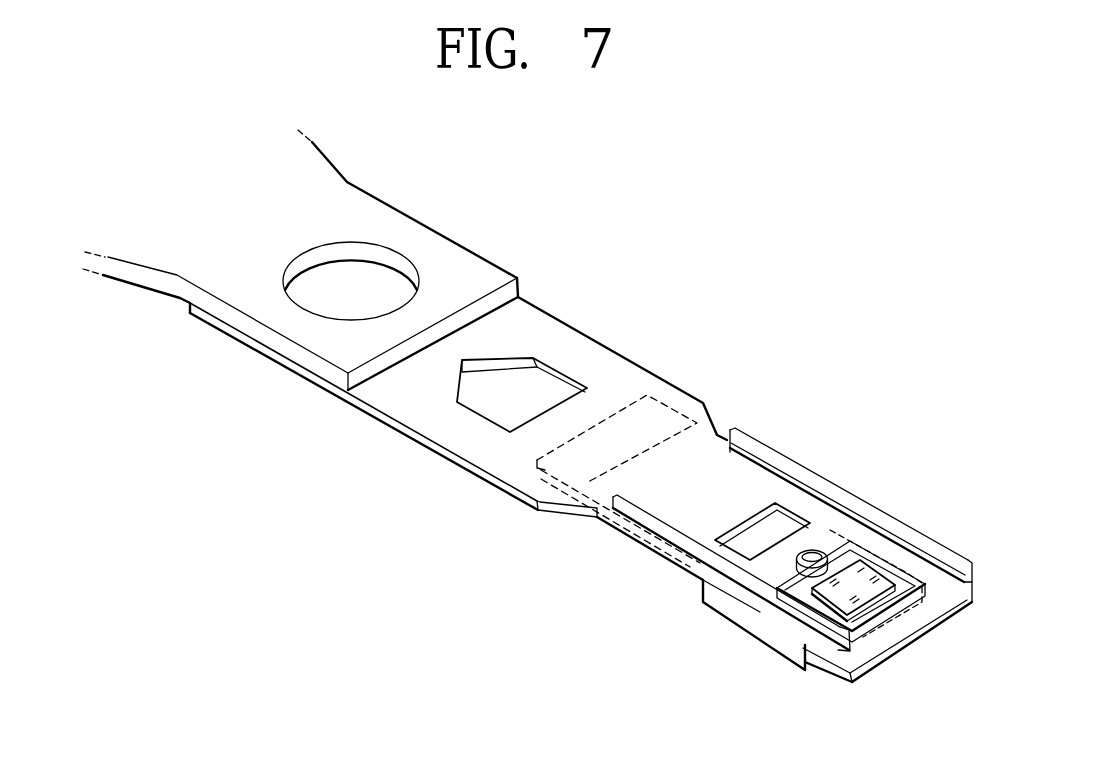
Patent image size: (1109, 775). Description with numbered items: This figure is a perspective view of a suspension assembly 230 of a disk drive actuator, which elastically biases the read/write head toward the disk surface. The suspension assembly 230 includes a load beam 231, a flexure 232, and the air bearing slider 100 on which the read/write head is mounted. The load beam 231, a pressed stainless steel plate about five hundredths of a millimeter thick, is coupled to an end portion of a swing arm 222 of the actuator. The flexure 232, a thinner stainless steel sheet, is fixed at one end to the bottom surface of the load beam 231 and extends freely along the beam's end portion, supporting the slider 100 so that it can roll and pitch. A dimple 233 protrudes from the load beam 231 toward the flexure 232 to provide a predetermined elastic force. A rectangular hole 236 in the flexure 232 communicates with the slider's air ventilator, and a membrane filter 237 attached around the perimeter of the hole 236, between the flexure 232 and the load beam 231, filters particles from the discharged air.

The air bearing slider 100 is at (760, 628).
The swing arm 222 is at (452, 258).
The suspension assembly 230 is at (507, 545).
The load beam 231 is at (505, 461).
The flexure 232 is at (863, 673).
The dimple 233 is at (812, 556).
The hole 236 is at (820, 604).
The filter 237 is at (866, 585).